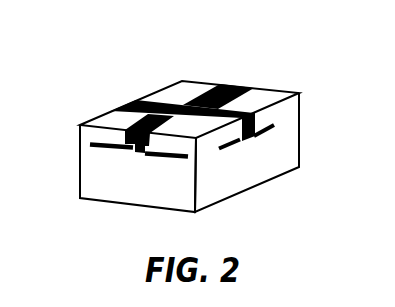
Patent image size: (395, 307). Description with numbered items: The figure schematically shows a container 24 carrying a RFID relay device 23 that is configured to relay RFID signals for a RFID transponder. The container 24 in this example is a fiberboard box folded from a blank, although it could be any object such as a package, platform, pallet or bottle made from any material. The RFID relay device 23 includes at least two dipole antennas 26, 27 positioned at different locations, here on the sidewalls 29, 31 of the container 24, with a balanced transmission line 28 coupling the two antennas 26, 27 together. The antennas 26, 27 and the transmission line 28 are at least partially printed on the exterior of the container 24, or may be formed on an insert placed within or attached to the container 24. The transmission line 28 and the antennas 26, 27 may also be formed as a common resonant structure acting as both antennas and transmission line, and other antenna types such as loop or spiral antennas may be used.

The RFID relay device 23 is at (125, 99).
The container 24 is at (288, 97).
The dipole antenna 26 is at (274, 126).
The dipole antenna 27 is at (97, 148).
The transmission line 28 is at (242, 111).
The sidewall 29 is at (238, 173).
The sidewall 31 is at (134, 190).